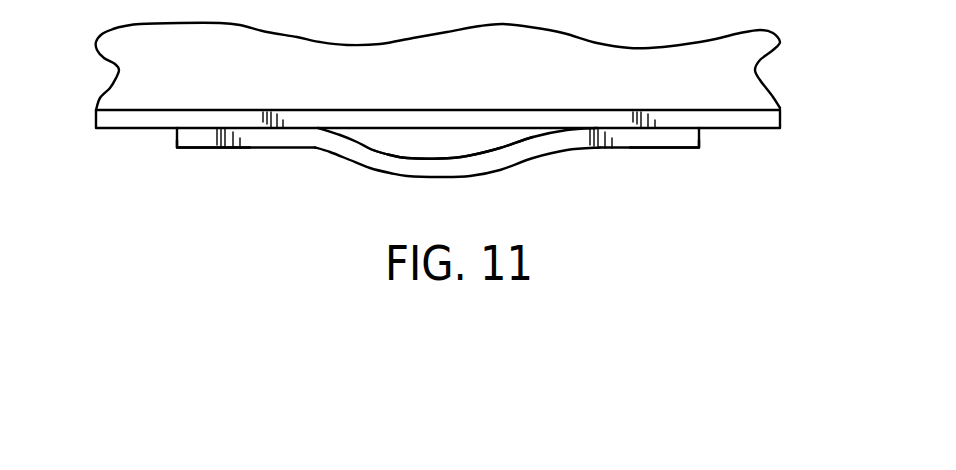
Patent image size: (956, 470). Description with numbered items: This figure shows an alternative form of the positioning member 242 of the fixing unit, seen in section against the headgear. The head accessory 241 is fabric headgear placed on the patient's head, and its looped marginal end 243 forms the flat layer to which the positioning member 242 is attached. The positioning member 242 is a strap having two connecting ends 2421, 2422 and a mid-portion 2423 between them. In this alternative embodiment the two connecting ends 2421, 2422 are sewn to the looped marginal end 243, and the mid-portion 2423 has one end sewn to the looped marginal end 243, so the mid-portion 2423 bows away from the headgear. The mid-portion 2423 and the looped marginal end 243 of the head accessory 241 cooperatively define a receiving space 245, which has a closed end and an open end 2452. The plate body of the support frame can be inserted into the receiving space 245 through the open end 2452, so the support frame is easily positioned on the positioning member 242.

The head accessory 241 is at (140, 73).
The looped marginal end 243 is at (133, 120).
The positioning member 242 is at (311, 146).
The connecting end 2421 is at (673, 137).
The connecting end 2422 is at (188, 138).
The mid-portion 2423 is at (423, 168).
The receiving space 245 is at (507, 138).
The open end 2452 is at (457, 143).